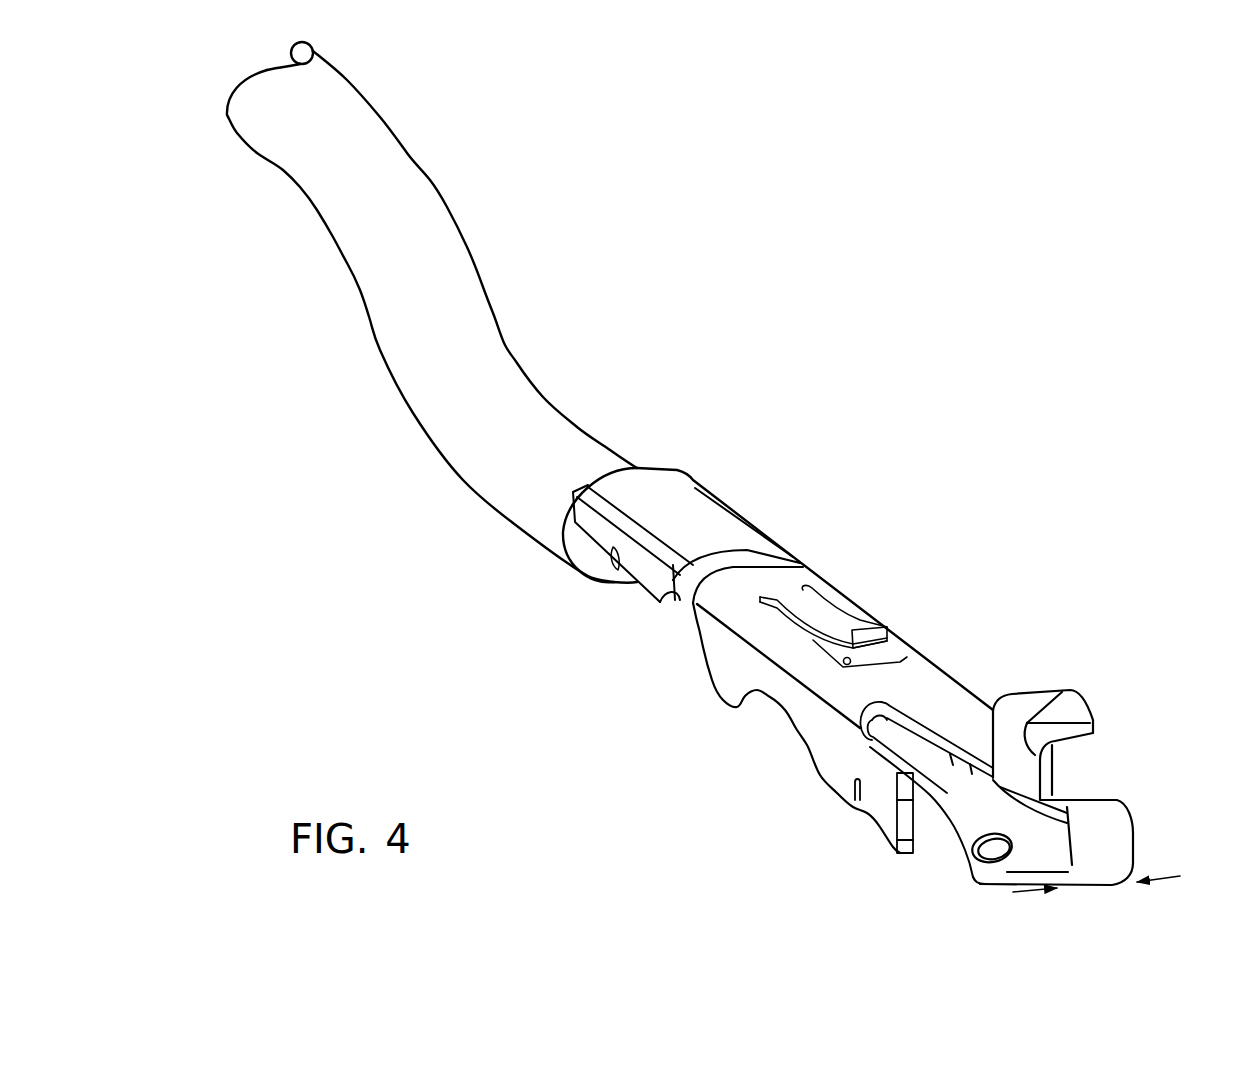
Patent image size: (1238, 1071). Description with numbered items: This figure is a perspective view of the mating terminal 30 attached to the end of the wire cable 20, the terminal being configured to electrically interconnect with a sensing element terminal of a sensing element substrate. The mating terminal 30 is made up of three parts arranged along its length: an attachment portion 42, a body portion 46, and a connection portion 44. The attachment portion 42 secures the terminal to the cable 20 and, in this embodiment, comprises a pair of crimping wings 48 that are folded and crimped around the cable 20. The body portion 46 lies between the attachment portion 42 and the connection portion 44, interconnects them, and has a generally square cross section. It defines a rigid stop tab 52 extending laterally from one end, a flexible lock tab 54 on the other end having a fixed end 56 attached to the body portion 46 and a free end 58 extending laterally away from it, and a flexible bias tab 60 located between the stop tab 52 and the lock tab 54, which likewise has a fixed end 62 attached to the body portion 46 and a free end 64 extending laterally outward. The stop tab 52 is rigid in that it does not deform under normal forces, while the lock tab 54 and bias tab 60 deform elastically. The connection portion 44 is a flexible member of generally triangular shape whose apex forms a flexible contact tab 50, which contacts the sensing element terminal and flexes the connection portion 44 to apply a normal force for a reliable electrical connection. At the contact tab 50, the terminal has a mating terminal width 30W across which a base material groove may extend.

The wire cable 20 is at (393, 360).
The mating terminal 30 is at (984, 396).
The mating terminal width 30W is at (1017, 893).
The attachment portion 42 is at (740, 461).
The connection portion 44 is at (1158, 762).
The body portion 46 is at (955, 615).
The crimping wings 48 is at (647, 578).
The contact tab 50 is at (975, 882).
The stop tab 52 is at (1065, 707).
The lock tab 54 is at (827, 617).
The fixed end 56 is at (793, 590).
The free end 58 is at (873, 631).
The bias tab 60 is at (885, 795).
The fixed end 62 is at (867, 753).
The free end 64 is at (907, 820).